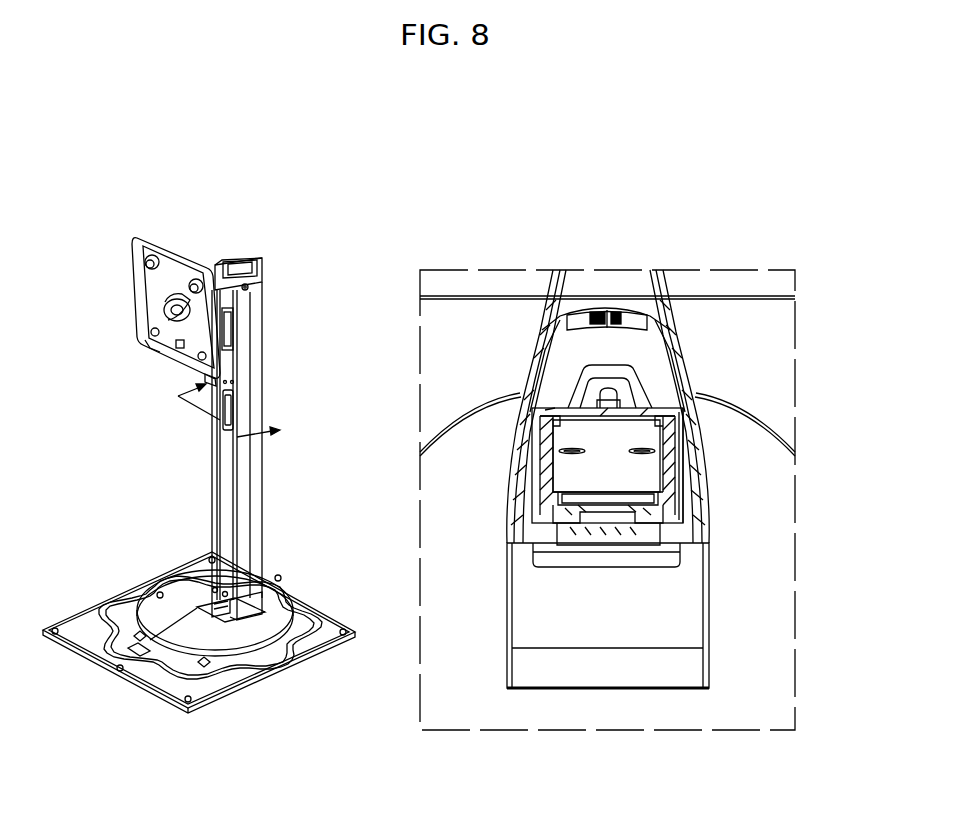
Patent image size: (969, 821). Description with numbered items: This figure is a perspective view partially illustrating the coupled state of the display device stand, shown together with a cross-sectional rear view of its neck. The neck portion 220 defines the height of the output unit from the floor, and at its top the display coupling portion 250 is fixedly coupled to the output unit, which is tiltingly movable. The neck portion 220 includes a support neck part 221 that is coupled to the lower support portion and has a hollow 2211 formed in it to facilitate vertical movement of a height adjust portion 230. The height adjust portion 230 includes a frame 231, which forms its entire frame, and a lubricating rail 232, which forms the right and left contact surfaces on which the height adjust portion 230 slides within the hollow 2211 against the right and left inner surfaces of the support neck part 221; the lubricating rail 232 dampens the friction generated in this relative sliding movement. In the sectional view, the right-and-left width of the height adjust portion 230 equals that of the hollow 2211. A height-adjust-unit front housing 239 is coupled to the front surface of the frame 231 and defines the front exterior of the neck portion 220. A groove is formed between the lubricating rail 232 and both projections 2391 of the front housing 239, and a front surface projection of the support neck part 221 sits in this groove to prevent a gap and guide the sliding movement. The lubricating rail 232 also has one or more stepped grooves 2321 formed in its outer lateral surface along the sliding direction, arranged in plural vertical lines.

The neck portion 220 is at (200, 477).
The support neck part 221 is at (258, 473).
The height adjust portion 230 is at (238, 393).
The frame 231 is at (548, 440).
The lubricating rail 232 is at (540, 503).
The height-adjust-unit front housing 239 is at (604, 540).
The display coupling portion 250 is at (150, 295).
The hollow 2211 is at (623, 468).
The stepped grooves 2321 is at (680, 493).
The projection 2391 is at (560, 540).